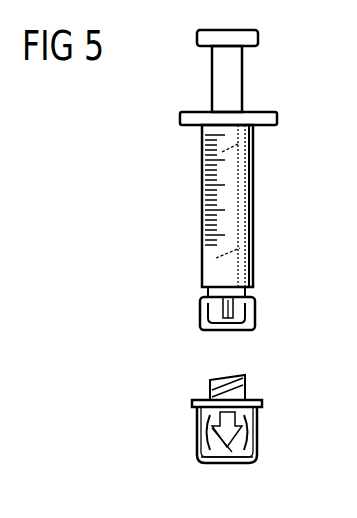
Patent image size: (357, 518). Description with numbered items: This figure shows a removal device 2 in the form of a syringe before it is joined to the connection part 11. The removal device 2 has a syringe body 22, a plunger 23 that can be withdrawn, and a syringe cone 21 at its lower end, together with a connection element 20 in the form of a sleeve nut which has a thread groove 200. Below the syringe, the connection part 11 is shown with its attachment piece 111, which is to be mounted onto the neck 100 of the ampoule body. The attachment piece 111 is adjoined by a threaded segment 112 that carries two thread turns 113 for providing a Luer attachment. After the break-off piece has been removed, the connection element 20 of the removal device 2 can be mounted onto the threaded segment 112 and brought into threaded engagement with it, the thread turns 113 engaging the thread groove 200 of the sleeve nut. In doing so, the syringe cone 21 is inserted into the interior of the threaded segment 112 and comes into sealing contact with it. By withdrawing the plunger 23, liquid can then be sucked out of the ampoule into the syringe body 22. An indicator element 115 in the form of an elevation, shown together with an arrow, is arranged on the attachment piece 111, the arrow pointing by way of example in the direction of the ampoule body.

The removal device 2 is at (253, 167).
The connection element 20 is at (206, 313).
The syringe cone 21 is at (247, 303).
The syringe body 22 is at (201, 254).
The plunger 23 is at (217, 77).
The thread groove 200 is at (258, 318).
The connection part 11 is at (190, 441).
The neck 100 is at (235, 456).
The attachment piece 111 is at (260, 437).
The threaded segment 112 is at (247, 386).
The thread turns 113 is at (216, 381).
The indicator element 115 is at (200, 453).